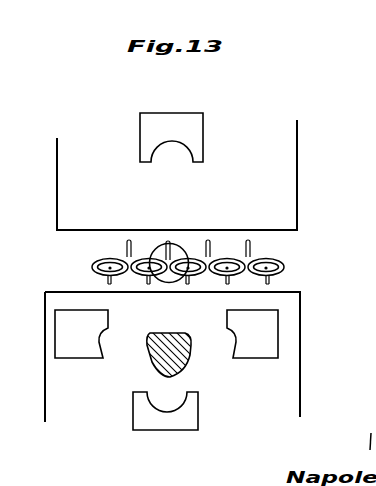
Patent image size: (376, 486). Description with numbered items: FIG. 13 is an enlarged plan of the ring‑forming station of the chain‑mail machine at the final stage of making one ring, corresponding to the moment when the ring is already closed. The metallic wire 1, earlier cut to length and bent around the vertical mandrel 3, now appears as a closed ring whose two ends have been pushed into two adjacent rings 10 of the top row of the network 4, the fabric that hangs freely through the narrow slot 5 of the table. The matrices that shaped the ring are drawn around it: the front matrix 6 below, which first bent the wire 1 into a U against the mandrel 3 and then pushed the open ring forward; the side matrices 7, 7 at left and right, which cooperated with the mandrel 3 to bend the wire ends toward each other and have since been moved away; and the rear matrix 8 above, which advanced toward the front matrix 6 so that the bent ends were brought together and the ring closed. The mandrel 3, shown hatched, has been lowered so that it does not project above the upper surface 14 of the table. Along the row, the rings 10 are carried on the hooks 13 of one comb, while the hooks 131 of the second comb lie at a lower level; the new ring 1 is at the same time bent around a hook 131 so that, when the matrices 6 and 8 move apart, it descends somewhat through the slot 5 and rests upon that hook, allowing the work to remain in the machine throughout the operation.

The metallic wire 1 is at (165, 284).
The vertical mandrel 3 is at (195, 355).
The network 4 is at (288, 262).
The narrow slot 5 is at (204, 260).
The front matrix 6 is at (142, 411).
The side matrices 7 is at (166, 334).
The rear matrix 8 is at (196, 130).
The rings of the last row 10 is at (146, 262).
The hooks 13 is at (107, 281).
The hooks of the second comb 131 is at (128, 241).
The upper surface of the table 14 is at (172, 271).